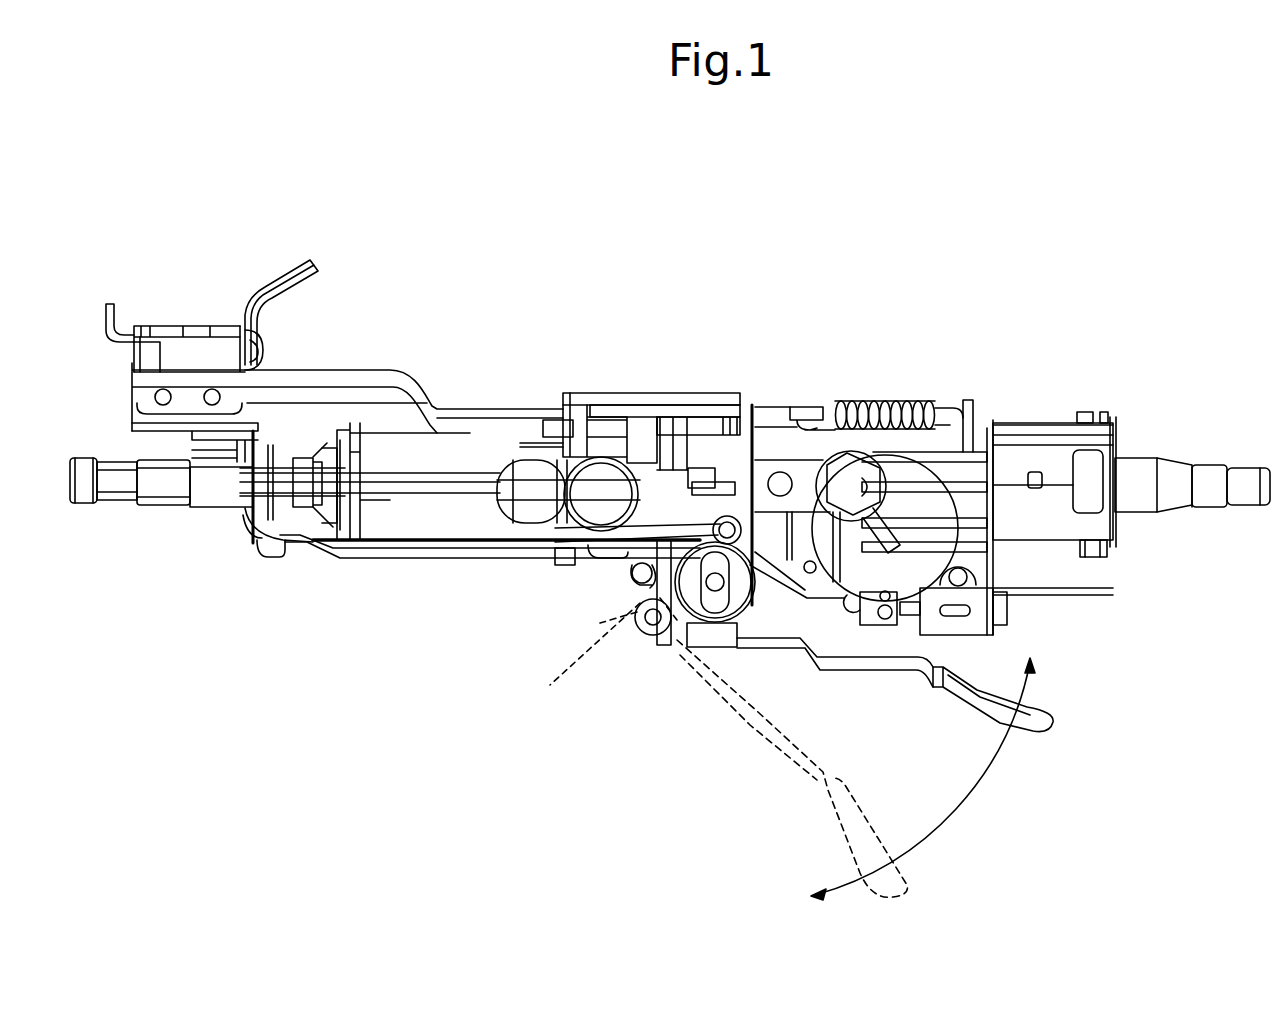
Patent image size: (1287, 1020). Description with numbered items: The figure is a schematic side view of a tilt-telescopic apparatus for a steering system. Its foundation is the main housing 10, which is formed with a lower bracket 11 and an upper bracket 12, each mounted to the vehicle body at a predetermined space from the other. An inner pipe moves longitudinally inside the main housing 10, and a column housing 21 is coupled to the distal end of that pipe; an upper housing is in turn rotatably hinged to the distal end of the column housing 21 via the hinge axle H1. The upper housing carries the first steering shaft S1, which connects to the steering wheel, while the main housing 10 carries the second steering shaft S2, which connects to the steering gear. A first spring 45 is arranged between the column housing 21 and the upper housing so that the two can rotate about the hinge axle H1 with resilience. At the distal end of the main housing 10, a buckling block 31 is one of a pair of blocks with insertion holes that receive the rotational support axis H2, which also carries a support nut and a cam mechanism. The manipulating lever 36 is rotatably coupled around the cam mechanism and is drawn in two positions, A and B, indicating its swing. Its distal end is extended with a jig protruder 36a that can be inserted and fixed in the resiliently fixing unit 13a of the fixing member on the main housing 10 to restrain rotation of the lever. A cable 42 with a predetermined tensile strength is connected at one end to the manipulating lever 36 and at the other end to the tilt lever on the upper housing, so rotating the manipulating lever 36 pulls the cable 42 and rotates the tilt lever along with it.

The main housing 10 is at (420, 512).
The lower bracket 11 is at (278, 284).
The upper bracket 12 is at (647, 402).
The resiliently fixing unit 13a is at (623, 578).
The column housing 21 is at (823, 437).
The buckling block 31 is at (677, 630).
The manipulating lever 36 is at (878, 663).
The jig protruder 36a is at (637, 617).
The cable 42 is at (700, 533).
The first spring 45 is at (865, 440).
The hinge axle H1 is at (840, 480).
The rotational support axis H2 is at (710, 598).
The first steering shaft S1 is at (1167, 482).
The second steering shaft S2 is at (118, 498).
The lever direction A is at (809, 897).
The lever direction B is at (929, 760).